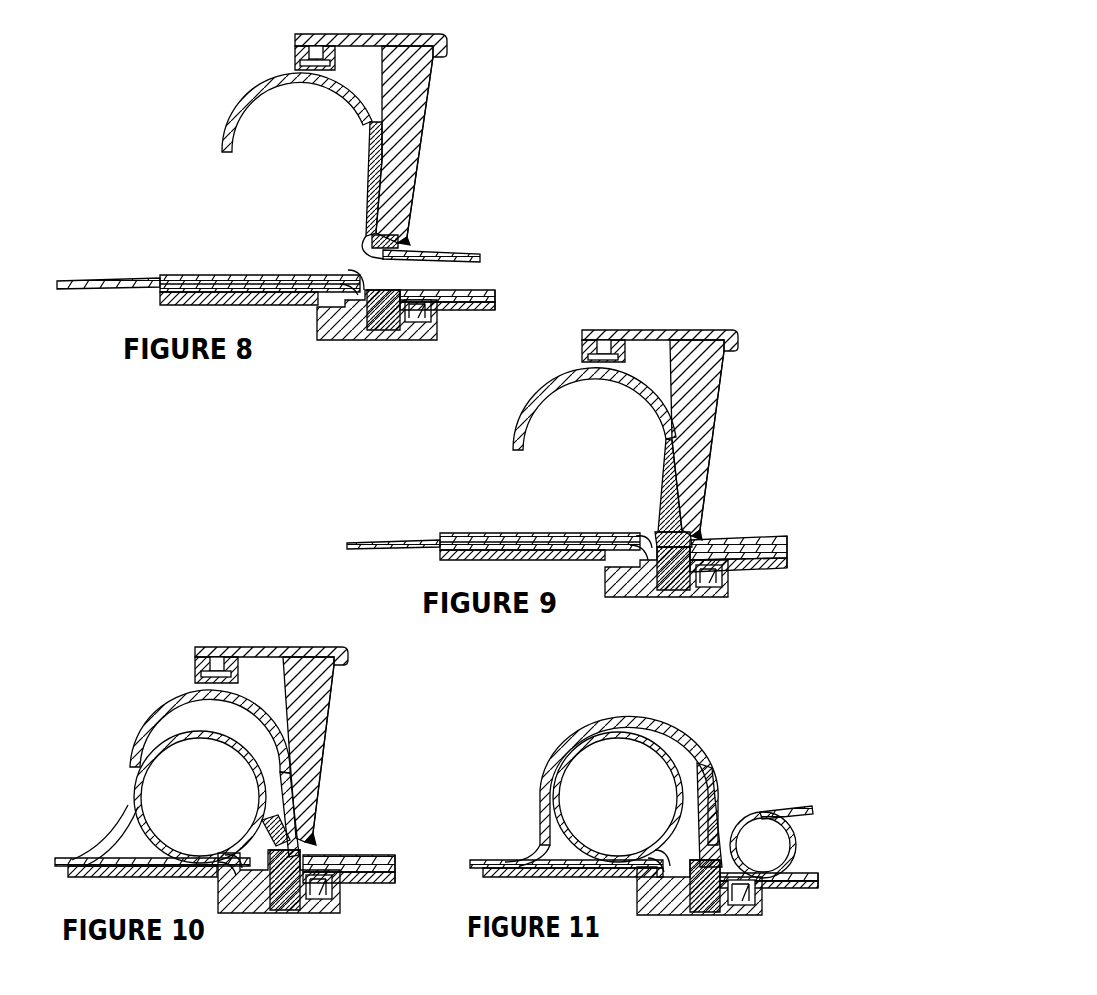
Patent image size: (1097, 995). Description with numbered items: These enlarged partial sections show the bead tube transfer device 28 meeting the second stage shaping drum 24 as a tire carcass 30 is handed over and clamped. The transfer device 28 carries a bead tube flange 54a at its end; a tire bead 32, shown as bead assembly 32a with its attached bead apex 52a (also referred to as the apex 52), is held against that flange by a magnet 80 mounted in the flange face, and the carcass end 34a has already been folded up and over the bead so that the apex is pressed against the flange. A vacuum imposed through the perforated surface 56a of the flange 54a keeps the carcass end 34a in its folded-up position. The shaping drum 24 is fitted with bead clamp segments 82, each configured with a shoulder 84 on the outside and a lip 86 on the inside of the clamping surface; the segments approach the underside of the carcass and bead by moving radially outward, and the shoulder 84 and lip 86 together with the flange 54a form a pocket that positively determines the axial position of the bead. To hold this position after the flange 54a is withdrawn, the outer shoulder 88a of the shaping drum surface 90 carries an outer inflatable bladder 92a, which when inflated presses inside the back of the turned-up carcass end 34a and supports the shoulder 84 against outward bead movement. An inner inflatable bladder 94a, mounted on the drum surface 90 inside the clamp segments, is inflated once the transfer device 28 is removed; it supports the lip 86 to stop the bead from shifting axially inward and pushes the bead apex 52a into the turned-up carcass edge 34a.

In FIG. 8, the second stage shaping drum 24 is at (292, 322).
In FIG. 9, the second stage shaping drum 24 is at (583, 582).
In FIG. 10, the second stage shaping drum 24 is at (283, 937).
In FIG. 11, the second stage shaping drum 24 is at (778, 925).
In FIG. 8, the bead tube transfer device 28 is at (450, 27).
In FIG. 9, the bead tube transfer device 28 is at (724, 316).
In FIG. 11, the tire carcass 30 is at (807, 800).
In FIG. 8, the tire bead 32 is at (373, 247).
In FIG. 9, the tire bead assembly 32a is at (660, 503).
In FIG. 10, the tire bead assembly 32a is at (280, 833).
In FIG. 11, the tire bead assembly 32a is at (690, 840).
In FIG. 8, the carcass end 34a is at (262, 92).
In FIG. 9, the carcass end 34a is at (542, 397).
In FIG. 10, the carcass end 34a is at (157, 702).
In FIG. 8, the bead apex 52 is at (390, 212).
In FIG. 9, the bead apex 52 is at (672, 467).
In FIG. 10, the bead apex 52a is at (287, 803).
In FIG. 11, the bead apex 52a is at (690, 807).
In FIG. 8, the bead tube flange 54a is at (400, 100).
In FIG. 9, the bead tube flange 54a is at (690, 360).
In FIG. 10, the bead tube flange 54a is at (303, 700).
In FIG. 8, the perforated surface 56a is at (413, 173).
In FIG. 9, the perforated surface 56a is at (695, 500).
In FIG. 10, the perforated surface 56a is at (303, 813).
In FIG. 8, the magnet 80 is at (400, 232).
In FIG. 9, the magnet 80 is at (693, 527).
In FIG. 10, the magnet 80 is at (313, 843).
In FIG. 8, the bead clamp segment 82 is at (380, 293).
In FIG. 9, the bead clamp segment 82 is at (668, 597).
In FIG. 10, the bead clamp segment 82 is at (277, 912).
In FIG. 11, the bead clamp segment 82 is at (683, 913).
In FIG. 8, the shoulder 84 is at (362, 283).
In FIG. 9, the shoulder 84 is at (650, 523).
In FIG. 10, the shoulder 84 is at (212, 877).
In FIG. 11, the shoulder 84 is at (670, 857).
In FIG. 8, the lip 86 is at (435, 310).
In FIG. 9, the lip 86 is at (730, 570).
In FIG. 10, the lip 86 is at (310, 912).
In FIG. 11, the lip 86 is at (697, 912).
In FIG. 8, the outer shoulder 88a is at (160, 300).
In FIG. 9, the outer shoulder 88a is at (440, 555).
In FIG. 10, the outer shoulder 88a is at (73, 873).
In FIG. 11, the outer shoulder 88a is at (512, 873).
In FIG. 8, the shaping drum surface 90 is at (495, 305).
In FIG. 9, the shaping drum surface 90 is at (787, 560).
In FIG. 10, the shaping drum surface 90 is at (395, 880).
In FIG. 11, the shaping drum surface 90 is at (817, 888).
In FIG. 8, the outer inflatable bladder 92a is at (168, 275).
In FIG. 9, the outer inflatable bladder 92a is at (457, 533).
In FIG. 10, the outer inflatable bladder 92a is at (122, 825).
In FIG. 11, the outer inflatable bladder 92a is at (553, 823).
In FIG. 8, the inner inflatable bladder 94a is at (480, 290).
In FIG. 9, the inner inflatable bladder 94a is at (785, 538).
In FIG. 10, the inner inflatable bladder 94a is at (397, 853).
In FIG. 11, the inner inflatable bladder 94a is at (793, 827).